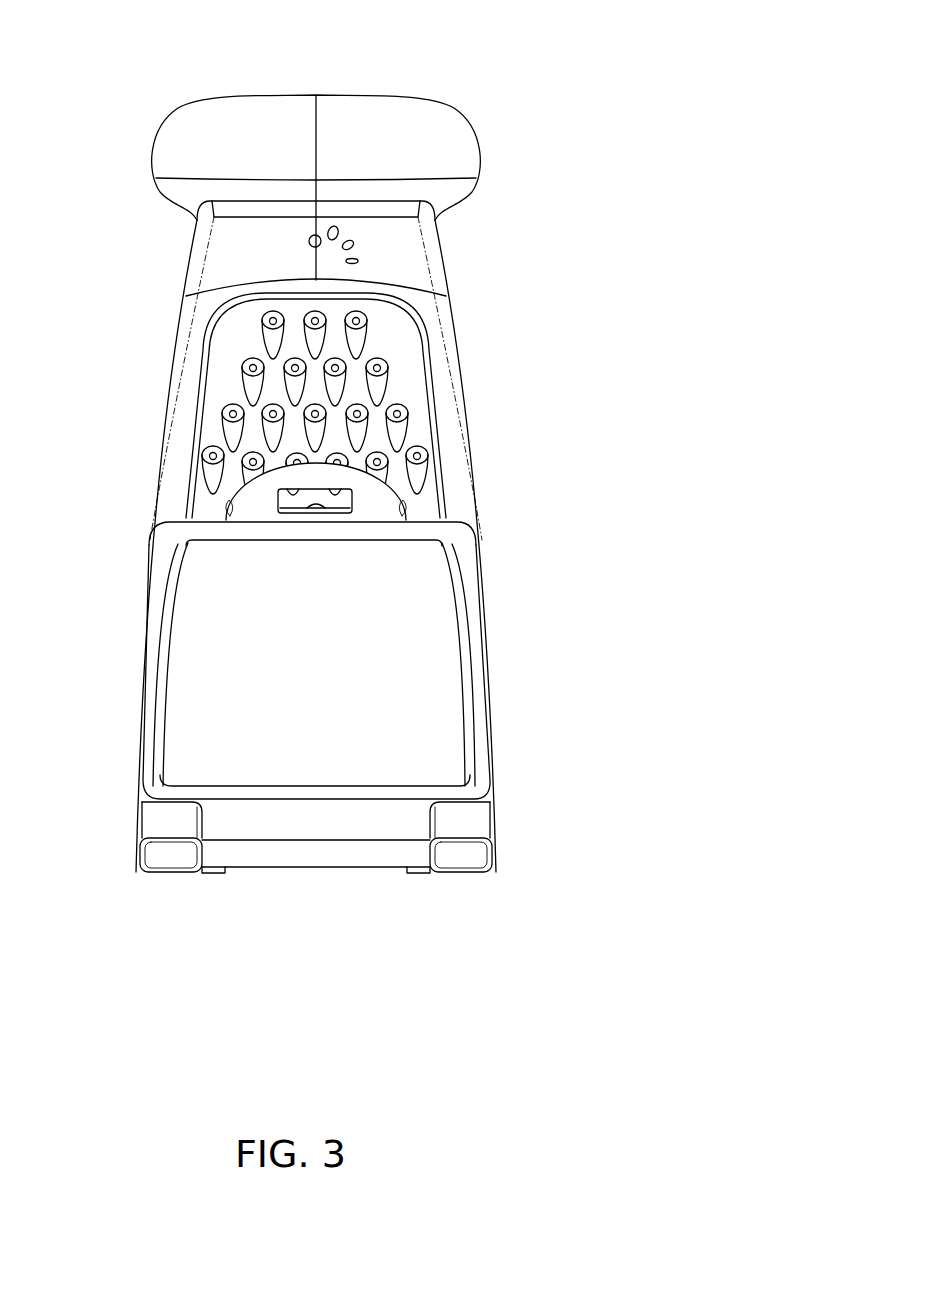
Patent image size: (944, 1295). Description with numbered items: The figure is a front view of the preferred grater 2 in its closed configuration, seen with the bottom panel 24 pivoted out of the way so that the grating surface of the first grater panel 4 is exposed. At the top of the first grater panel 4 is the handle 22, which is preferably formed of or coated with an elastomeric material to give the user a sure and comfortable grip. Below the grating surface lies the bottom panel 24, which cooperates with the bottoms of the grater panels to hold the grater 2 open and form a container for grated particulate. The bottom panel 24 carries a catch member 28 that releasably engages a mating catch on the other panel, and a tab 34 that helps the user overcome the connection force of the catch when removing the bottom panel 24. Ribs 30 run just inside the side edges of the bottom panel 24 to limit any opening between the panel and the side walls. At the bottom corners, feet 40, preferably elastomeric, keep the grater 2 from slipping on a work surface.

The grater 2 is at (597, 93).
The first grater panel 4 is at (455, 342).
The handle 22 is at (372, 125).
The bottom panel 24 is at (395, 678).
The catch member 28 is at (357, 502).
The ribs 30 is at (460, 620).
The tab 34 is at (322, 478).
The feet 40 is at (172, 865).